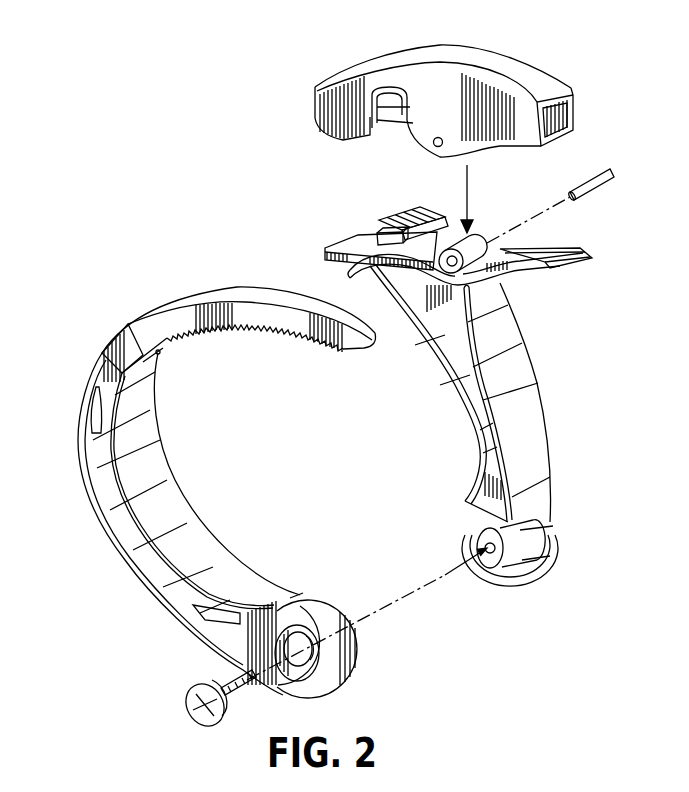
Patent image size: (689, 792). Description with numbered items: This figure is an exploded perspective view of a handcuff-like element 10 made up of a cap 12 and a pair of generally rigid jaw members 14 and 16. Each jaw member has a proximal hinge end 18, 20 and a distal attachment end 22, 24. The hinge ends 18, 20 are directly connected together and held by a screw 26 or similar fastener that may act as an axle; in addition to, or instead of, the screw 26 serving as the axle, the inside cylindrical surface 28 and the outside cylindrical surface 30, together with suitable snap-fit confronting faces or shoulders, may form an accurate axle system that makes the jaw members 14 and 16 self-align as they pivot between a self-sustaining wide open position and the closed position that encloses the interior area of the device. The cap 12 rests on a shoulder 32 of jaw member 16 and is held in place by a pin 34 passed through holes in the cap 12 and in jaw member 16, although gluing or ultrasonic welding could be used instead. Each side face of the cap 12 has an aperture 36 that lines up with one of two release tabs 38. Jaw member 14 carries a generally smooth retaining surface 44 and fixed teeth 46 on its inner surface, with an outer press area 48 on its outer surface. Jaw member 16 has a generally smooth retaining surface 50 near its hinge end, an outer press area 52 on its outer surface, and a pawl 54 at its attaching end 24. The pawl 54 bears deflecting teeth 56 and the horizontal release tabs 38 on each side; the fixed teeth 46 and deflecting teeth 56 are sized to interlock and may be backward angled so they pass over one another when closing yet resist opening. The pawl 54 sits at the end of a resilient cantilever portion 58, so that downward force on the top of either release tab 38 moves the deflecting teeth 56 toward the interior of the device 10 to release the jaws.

The handcuff-like element 10 is at (98, 115).
The cap 12 is at (522, 61).
The jaw member 14 is at (207, 504).
The jaw member 16 is at (441, 449).
The proximal hinge end 18 is at (321, 659).
The proximal hinge end 20 is at (419, 600).
The distal attachment end 22 is at (239, 322).
The distal attachment end 24 is at (553, 258).
The screw 26 is at (187, 698).
The inside cylindrical surface 28 is at (318, 655).
The outside cylindrical surface 30 is at (500, 581).
The shoulder 32 is at (348, 269).
The pin 34 is at (441, 138).
The apertures 36 is at (370, 116).
The release tabs 38 is at (378, 232).
The retaining surface 44 is at (204, 533).
The fixed teeth 46 is at (259, 333).
The outer press area 48 is at (137, 573).
The retaining surface 50 is at (478, 440).
The outer press area 52 is at (549, 448).
The pawl 54 is at (382, 228).
The deflecting teeth 56 is at (422, 208).
The resilient cantilever portion 58 is at (330, 252).